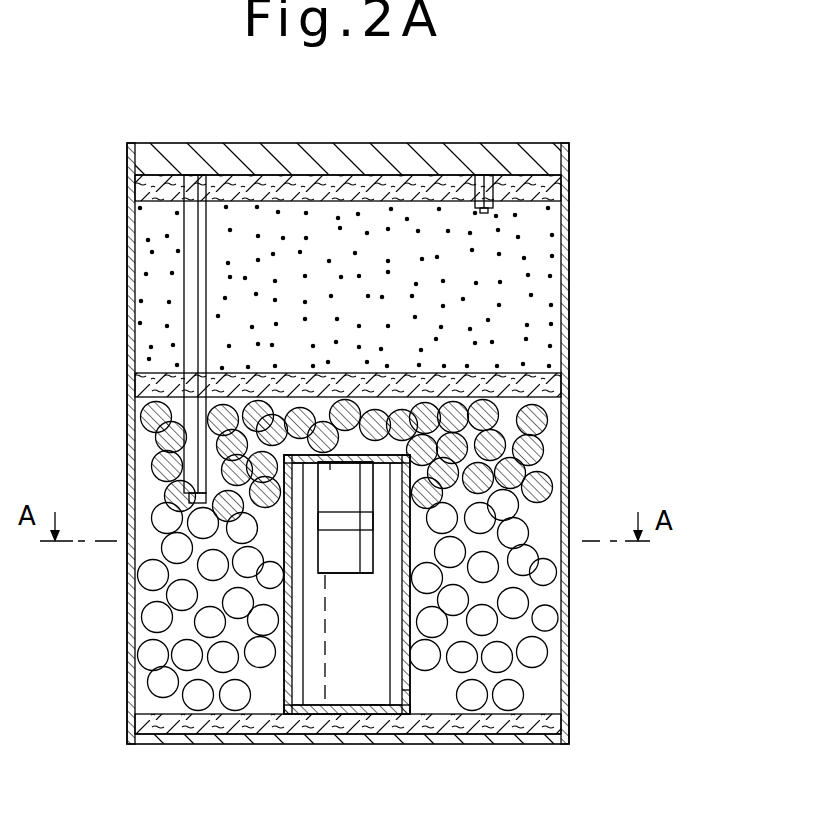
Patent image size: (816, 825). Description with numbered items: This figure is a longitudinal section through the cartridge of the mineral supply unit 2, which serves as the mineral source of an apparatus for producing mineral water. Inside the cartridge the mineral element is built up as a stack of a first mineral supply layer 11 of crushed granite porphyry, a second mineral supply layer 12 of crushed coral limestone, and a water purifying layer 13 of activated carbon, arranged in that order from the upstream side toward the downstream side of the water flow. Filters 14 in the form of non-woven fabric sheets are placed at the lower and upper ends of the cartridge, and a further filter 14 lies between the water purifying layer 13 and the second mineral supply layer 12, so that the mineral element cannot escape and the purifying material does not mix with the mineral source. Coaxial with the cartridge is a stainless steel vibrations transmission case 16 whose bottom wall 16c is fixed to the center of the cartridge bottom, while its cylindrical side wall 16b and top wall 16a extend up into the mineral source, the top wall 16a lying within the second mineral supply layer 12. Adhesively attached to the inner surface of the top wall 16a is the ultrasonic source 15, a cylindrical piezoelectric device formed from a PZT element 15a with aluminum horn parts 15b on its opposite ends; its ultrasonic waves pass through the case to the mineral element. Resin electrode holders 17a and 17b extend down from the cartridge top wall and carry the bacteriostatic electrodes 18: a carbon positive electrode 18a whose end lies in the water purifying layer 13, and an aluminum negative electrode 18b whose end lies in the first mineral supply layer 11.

The mineral supply unit 2 is at (100, 162).
The first mineral supply layer 11 is at (200, 624).
The second mineral supply layer 12 is at (137, 409).
The water purifying layer 13 is at (255, 285).
The filter 14 is at (137, 199).
The ultrasonic source 15 is at (544, 473).
The PZT element 15a is at (367, 523).
The horn part 15b is at (367, 495).
The vibrations transmission case 16 is at (361, 568).
The top wall 16a is at (345, 453).
The cylindrical side wall 16b is at (413, 687).
The bottom wall 16c is at (378, 710).
The electrode holder 17a is at (486, 178).
The electrode holder 17b is at (190, 235).
The bacteriostatic electrodes 18 is at (373, 322).
The positive electrode 18a is at (487, 213).
The negative electrode 18b is at (225, 408).